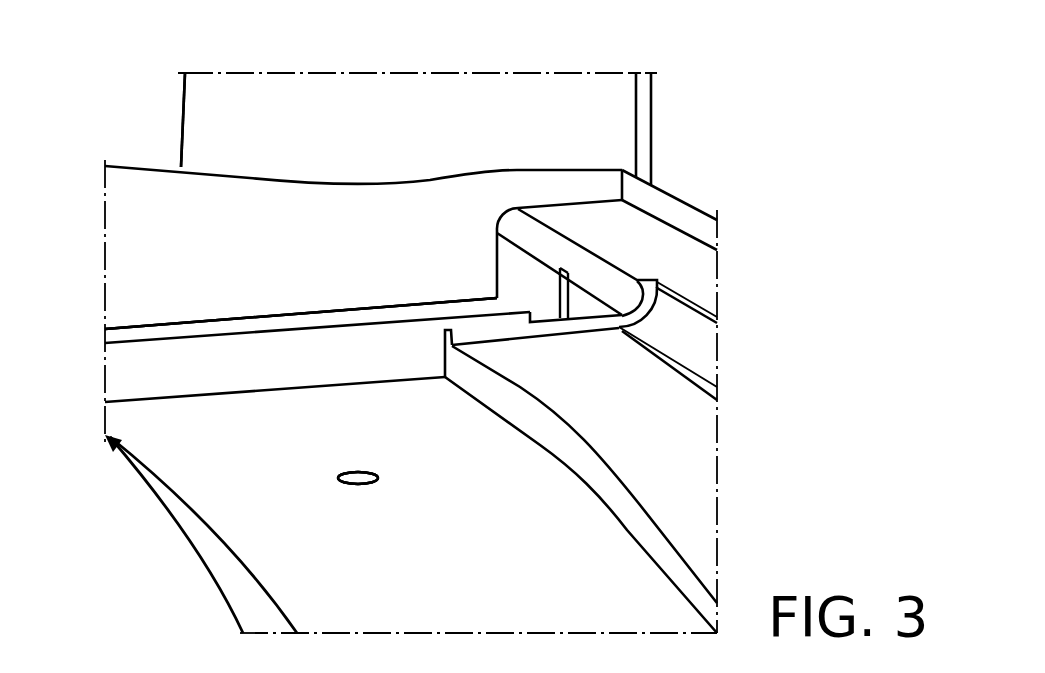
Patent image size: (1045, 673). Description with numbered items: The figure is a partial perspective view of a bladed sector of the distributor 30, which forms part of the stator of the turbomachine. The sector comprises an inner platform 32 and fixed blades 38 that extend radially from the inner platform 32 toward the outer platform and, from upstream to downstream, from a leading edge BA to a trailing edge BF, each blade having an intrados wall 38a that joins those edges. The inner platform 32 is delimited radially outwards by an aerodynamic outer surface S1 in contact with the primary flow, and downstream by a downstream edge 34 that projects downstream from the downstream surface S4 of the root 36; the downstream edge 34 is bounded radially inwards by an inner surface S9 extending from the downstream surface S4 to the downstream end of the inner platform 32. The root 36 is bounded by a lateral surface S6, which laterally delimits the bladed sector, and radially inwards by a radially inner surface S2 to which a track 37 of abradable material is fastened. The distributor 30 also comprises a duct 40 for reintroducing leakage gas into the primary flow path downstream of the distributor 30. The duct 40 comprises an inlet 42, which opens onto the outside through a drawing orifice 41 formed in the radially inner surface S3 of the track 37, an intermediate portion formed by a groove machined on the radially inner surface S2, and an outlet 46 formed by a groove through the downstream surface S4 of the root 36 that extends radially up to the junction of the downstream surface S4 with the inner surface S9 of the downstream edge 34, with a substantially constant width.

The distributor 30 is at (257, 47).
The inner platform 32 is at (417, 207).
The downstream edge 34 is at (640, 228).
The root 36 is at (157, 279).
The track made of an abradable material 37 is at (174, 375).
The fixed blades 38 is at (203, 89).
The intrados wall 38a is at (507, 110).
The duct 40 is at (337, 487).
The drawing orifice 41 is at (353, 483).
The inlet 42 is at (374, 487).
The outlet 46 is at (580, 307).
The bend axis BA is at (181, 122).
The trailing edge BF is at (643, 125).
The aerodynamic outer surface S1 is at (143, 165).
The radially inner surface of the root S2 is at (185, 330).
The radially inner surface of the track S3 is at (208, 448).
The downstream surface of the root S4 is at (538, 295).
The lateral surface S6 is at (153, 250).
The inner surface of the downstream edge S9 is at (687, 285).